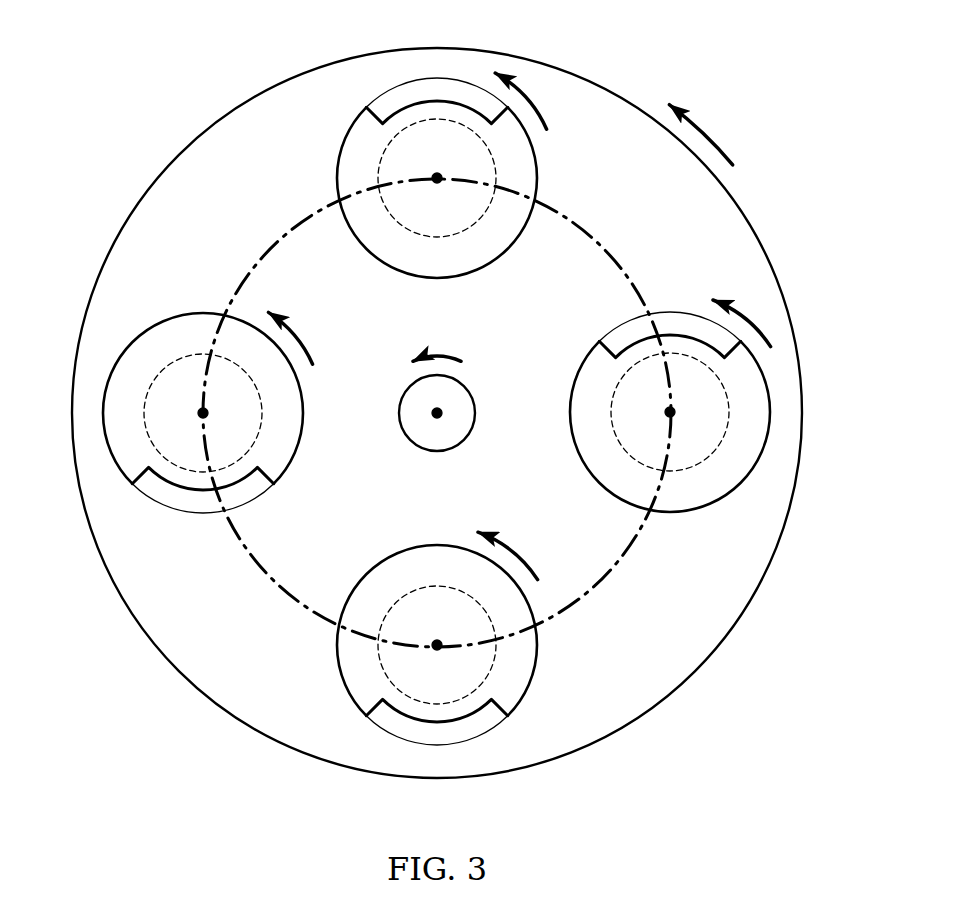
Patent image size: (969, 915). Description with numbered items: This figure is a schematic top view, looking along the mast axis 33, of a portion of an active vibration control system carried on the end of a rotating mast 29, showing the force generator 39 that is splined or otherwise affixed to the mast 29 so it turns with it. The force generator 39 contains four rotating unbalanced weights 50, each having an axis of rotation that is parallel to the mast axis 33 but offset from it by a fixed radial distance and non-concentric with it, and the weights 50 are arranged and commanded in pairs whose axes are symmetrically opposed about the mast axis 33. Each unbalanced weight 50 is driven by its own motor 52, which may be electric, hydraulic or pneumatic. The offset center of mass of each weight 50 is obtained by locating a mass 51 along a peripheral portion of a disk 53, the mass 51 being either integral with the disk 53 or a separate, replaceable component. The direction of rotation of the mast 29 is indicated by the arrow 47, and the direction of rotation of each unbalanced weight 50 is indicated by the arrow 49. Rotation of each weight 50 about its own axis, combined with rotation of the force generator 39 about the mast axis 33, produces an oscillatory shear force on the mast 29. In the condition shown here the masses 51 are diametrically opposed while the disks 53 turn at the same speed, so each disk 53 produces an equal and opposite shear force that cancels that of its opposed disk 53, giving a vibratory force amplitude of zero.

The mast 29 is at (447, 451).
The mast axis 33 is at (430, 414).
The force generator 39 is at (333, 59).
The arrow 47 is at (433, 356).
The arrow 49 is at (537, 105).
The unbalanced weight 50 is at (553, 170).
The mass 51 is at (440, 86).
The motor 52 is at (388, 212).
The disk 53 is at (468, 277).